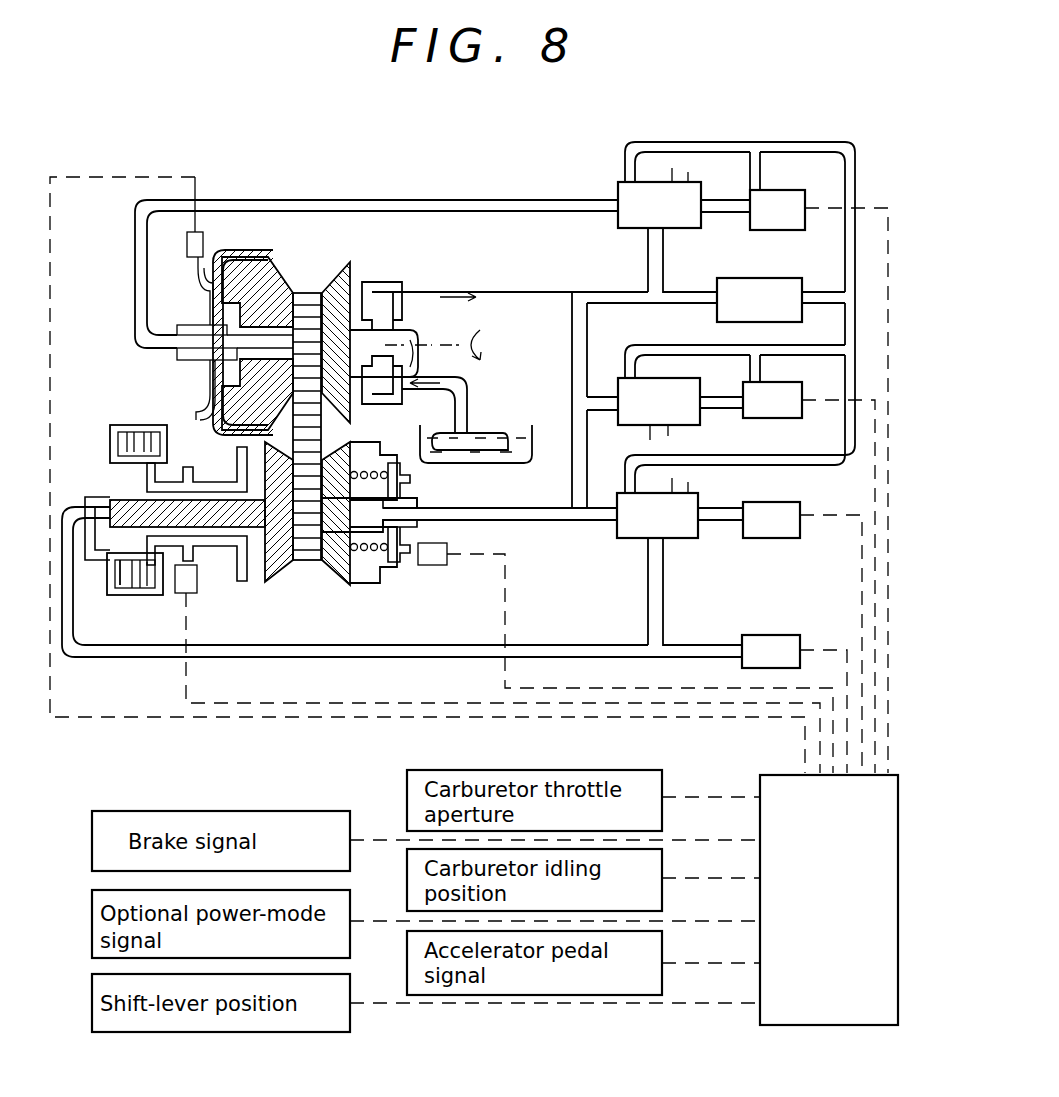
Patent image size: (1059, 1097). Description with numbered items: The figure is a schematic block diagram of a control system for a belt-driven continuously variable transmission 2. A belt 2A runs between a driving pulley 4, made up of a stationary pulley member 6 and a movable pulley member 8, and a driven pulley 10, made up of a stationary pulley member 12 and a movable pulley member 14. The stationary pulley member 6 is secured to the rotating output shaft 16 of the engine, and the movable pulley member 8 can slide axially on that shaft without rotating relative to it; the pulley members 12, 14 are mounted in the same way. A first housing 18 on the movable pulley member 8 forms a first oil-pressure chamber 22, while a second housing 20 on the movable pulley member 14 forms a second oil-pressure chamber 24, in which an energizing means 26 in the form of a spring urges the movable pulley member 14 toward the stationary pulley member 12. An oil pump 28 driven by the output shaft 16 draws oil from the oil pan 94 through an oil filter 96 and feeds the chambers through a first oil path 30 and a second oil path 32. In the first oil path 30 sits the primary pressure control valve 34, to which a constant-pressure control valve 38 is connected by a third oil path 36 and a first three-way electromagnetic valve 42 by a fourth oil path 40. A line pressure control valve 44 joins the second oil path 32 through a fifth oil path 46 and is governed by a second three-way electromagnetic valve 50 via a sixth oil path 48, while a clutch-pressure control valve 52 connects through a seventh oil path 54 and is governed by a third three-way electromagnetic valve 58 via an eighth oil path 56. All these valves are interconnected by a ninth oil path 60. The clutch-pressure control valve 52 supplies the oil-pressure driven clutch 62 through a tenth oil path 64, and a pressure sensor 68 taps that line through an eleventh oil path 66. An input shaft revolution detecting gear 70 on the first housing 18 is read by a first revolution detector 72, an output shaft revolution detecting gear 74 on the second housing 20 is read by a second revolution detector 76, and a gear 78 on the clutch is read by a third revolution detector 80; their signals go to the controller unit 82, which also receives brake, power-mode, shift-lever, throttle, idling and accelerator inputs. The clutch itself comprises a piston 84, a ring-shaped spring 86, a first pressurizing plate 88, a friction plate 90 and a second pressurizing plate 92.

The belt-driven continuously variable transmission 2 is at (775, 125).
The belt 2A is at (305, 292).
The driving pulley 4 is at (140, 357).
The stationary pulley member 6 is at (351, 276).
The movable pulley member 8 is at (276, 266).
The driven pulley 10 is at (408, 566).
The stationary pulley member 12 is at (279, 566).
The movable pulley member 14 is at (332, 566).
The output shaft 16 is at (405, 337).
The first housing 18 is at (215, 438).
The second housing 20 is at (378, 470).
The first oil-pressure chamber 22 is at (222, 382).
The second oil-pressure chamber 24 is at (368, 556).
The energizing means 26 is at (377, 552).
The oil pump 28 is at (385, 298).
The first oil path 30 is at (544, 199).
The second oil path 32 is at (581, 293).
The primary pressure control valve 34 is at (659, 198).
The third oil path 36 is at (673, 300).
The constant-pressure control valve 38 is at (781, 300).
The fourth oil path 40 is at (724, 213).
The first three-way electromagnetic valve 42 is at (819, 481).
The line pressure control valve 44 is at (731, 392).
The fifth oil path 46 is at (597, 394).
The sixth oil path 48 is at (724, 409).
The second three-way electromagnetic valve 50 is at (809, 577).
The clutch-pressure control valve 52 is at (657, 508).
The seventh oil path 54 is at (593, 522).
The eighth oil path 56 is at (722, 522).
The third three-way electromagnetic valve 58 is at (802, 637).
The ninth oil path 60 is at (838, 143).
The oil-pressure driven clutch 62 is at (110, 456).
The tenth oil path 64 is at (430, 658).
The eleventh oil path 66 is at (705, 644).
The pressure sensor 68 is at (776, 634).
The input shaft revolution detecting gear 70 is at (199, 275).
The first revolution detector 72 is at (204, 246).
The output shaft revolution detecting gear 74 is at (412, 481).
The second revolution detector 76 is at (448, 556).
The gear 78 is at (186, 442).
The third revolution detector 80 is at (197, 578).
The controller unit 82 is at (760, 773).
The piston 84 is at (112, 527).
The ring-shaped spring 86 is at (118, 560).
The first pressurizing plate 88 is at (133, 582).
The friction plate 90 is at (143, 578).
The second pressurizing plate 92 is at (153, 590).
The oil pan 94 is at (505, 461).
The oil filter 96 is at (490, 432).